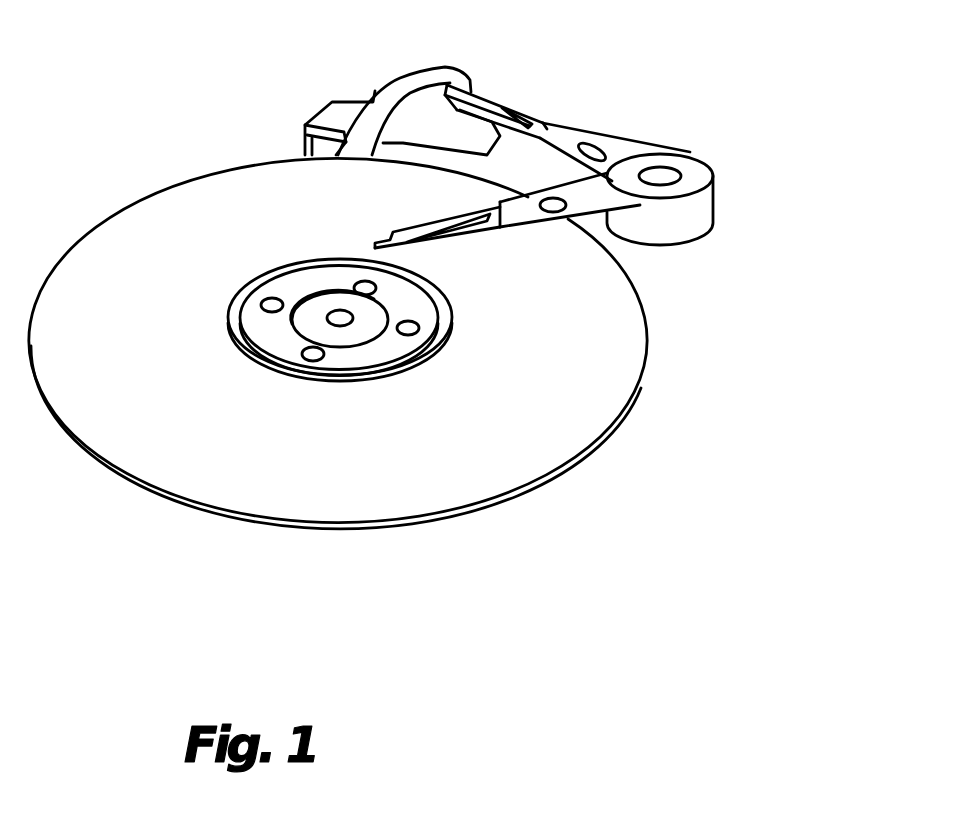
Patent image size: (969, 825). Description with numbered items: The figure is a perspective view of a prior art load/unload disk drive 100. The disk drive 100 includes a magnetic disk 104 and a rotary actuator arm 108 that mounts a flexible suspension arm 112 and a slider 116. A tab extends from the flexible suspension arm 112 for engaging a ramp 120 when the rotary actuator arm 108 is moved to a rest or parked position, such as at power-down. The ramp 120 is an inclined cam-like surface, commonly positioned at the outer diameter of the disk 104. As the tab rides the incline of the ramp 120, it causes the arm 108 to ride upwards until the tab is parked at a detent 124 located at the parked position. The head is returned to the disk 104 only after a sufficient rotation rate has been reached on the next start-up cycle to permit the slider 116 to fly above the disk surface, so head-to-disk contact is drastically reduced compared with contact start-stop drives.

The disk drive 100 is at (747, 113).
The magnetic disk 104 is at (641, 382).
The rotary actuator arm 108 is at (618, 136).
The flexible suspension arm 112 is at (381, 236).
The slider 116 is at (466, 70).
The ramp 120 is at (303, 127).
The detent 124 is at (437, 78).